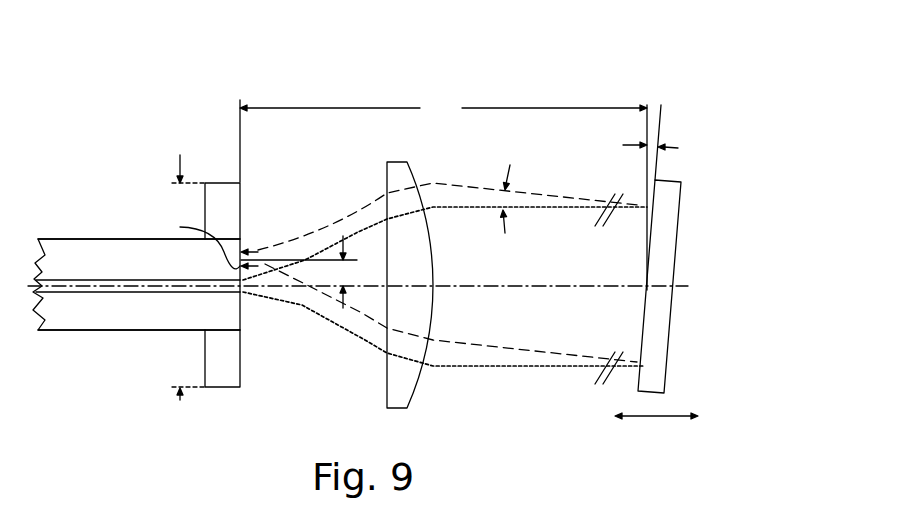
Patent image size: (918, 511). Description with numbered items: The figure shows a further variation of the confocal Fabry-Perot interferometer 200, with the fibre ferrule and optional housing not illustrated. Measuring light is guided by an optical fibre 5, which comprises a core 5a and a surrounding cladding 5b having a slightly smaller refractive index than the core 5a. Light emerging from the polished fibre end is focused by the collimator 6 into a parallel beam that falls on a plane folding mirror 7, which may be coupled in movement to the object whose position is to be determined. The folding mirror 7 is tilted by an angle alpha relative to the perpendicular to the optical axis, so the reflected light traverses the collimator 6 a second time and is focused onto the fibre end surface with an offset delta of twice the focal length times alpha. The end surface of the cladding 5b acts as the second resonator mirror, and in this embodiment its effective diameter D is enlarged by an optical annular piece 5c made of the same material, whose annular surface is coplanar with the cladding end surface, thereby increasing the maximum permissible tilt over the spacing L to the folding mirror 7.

The Fabry-Perot interferometer 200 is at (524, 81).
The optical fibre 5 is at (117, 239).
The core 5a is at (68, 292).
The cladding 5b is at (84, 256).
The annular piece 5c is at (218, 218).
The collimator 6 is at (418, 381).
The folding mirror 7 is at (670, 249).